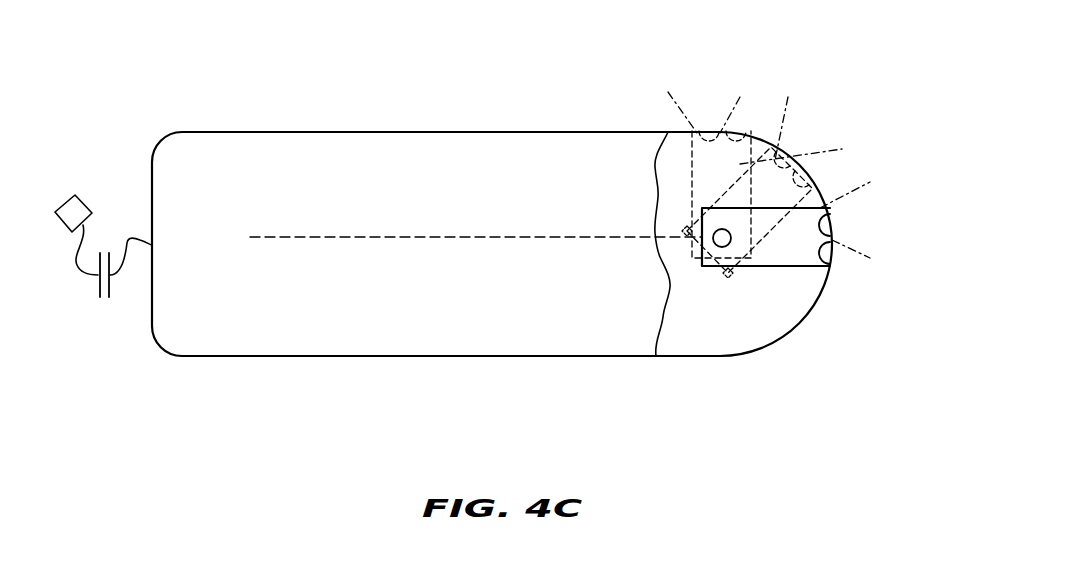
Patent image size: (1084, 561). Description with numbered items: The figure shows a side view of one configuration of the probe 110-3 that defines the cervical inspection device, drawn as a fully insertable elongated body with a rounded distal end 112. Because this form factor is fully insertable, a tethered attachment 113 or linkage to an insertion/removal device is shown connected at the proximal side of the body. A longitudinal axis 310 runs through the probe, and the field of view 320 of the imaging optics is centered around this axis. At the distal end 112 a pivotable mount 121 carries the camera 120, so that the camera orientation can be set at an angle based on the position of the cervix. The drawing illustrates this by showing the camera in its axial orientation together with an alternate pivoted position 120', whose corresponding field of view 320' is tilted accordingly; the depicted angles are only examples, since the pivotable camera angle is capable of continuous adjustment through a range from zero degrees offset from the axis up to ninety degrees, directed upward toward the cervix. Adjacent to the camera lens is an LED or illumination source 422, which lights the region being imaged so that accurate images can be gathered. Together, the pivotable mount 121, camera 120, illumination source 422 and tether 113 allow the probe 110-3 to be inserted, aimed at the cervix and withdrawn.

The probe 110-3 is at (402, 357).
The distal end 112 is at (833, 311).
The tethered attachment 113 is at (126, 241).
The axis 310 is at (347, 238).
The camera 120 is at (698, 262).
The pivotable mount 121 is at (713, 239).
The field of view (FOV) 320 is at (883, 210).
The LED or illumination source 422 is at (832, 253).
The alternate camera position 120' is at (806, 209).
The field of view at alternate camera position 320' is at (797, 121).